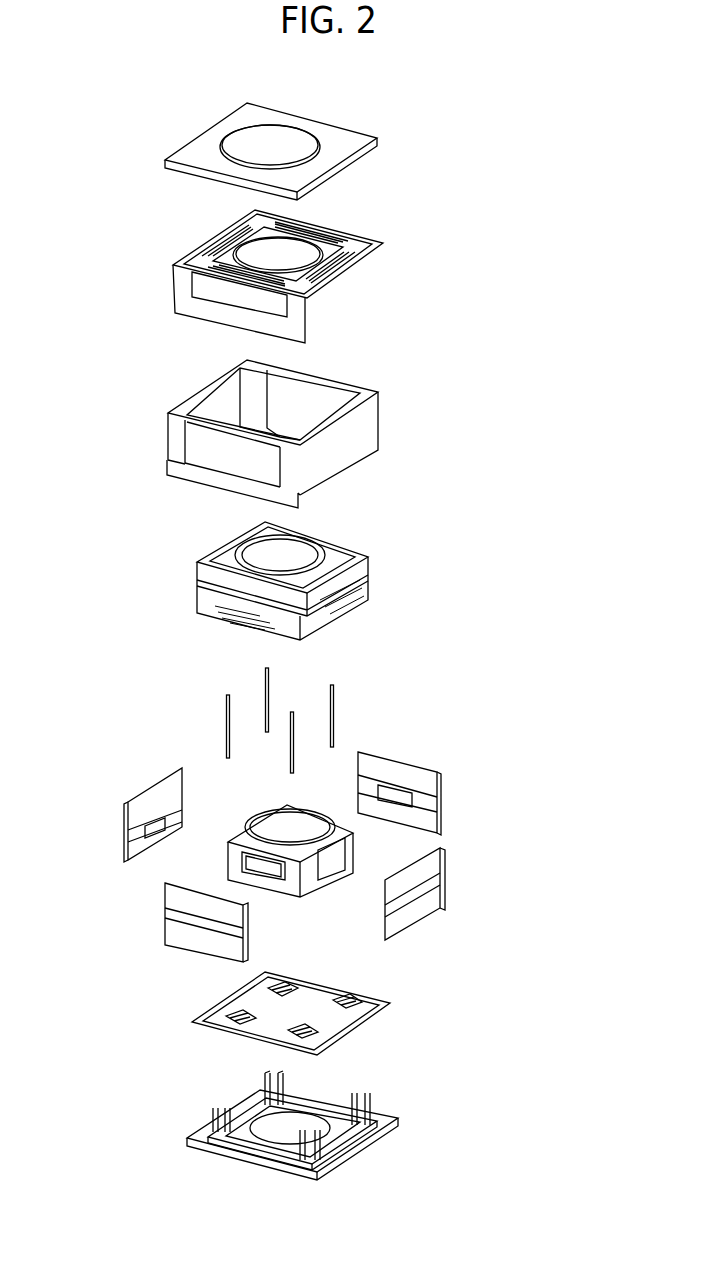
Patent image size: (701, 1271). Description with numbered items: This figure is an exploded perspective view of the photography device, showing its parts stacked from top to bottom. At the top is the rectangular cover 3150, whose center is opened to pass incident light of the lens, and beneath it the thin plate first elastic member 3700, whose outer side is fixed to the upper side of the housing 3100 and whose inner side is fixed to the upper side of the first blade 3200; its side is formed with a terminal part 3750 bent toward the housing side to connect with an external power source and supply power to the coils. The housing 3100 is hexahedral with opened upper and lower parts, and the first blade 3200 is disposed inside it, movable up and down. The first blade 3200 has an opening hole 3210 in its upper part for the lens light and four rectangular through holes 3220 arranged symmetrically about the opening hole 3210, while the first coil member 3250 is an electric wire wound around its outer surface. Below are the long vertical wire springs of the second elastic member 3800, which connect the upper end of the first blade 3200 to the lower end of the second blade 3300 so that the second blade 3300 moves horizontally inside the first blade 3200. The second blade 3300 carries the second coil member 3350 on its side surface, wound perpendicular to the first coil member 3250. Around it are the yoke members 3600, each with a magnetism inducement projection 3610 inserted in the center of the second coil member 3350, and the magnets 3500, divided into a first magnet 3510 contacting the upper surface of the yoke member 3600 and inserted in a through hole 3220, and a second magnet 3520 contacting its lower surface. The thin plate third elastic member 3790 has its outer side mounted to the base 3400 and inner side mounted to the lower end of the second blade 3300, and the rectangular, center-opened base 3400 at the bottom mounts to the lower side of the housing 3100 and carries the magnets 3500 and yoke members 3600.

The cover 3150 is at (337, 138).
The first elastic member 3700 is at (357, 235).
The terminal part 3750 is at (197, 305).
The housing 3100 is at (350, 443).
The first blade 3200 is at (165, 580).
The opening hole 3210 is at (269, 570).
The through hole 3220 is at (365, 567).
The first coil member 3250 is at (213, 622).
The second elastic member 3800 is at (335, 693).
The second blade 3300 is at (247, 817).
The second coil member 3350 is at (240, 863).
The yoke member 3600 is at (433, 803).
The magnetism inducement projection 3610 is at (395, 778).
The magnet 3500 is at (528, 855).
The first magnet 3510 is at (428, 872).
The second magnet 3520 is at (430, 905).
The third elastic member 3790 is at (390, 997).
The base 3400 is at (388, 1110).